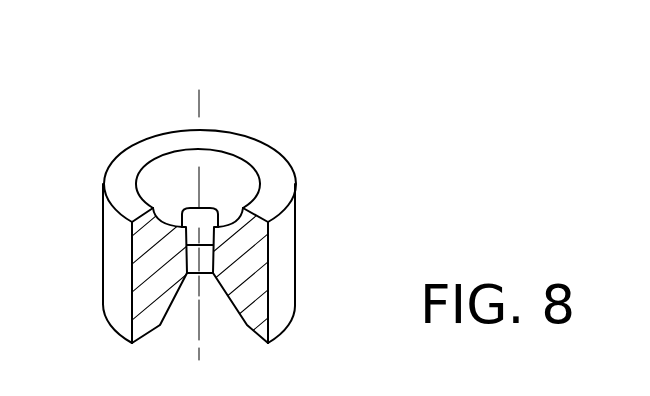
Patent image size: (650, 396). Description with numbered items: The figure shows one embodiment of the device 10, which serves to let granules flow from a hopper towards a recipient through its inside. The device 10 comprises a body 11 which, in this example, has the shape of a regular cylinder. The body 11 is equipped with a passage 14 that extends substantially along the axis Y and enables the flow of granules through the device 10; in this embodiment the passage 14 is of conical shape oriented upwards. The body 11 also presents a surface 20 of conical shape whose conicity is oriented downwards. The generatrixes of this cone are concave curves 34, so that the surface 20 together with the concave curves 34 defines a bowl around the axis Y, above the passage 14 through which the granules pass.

The device 10 is at (249, 231).
The body 11 is at (287, 276).
The passage 14 is at (228, 303).
The surface 20 is at (237, 178).
The concave curves 34 is at (158, 233).
The axis Y is at (197, 113).